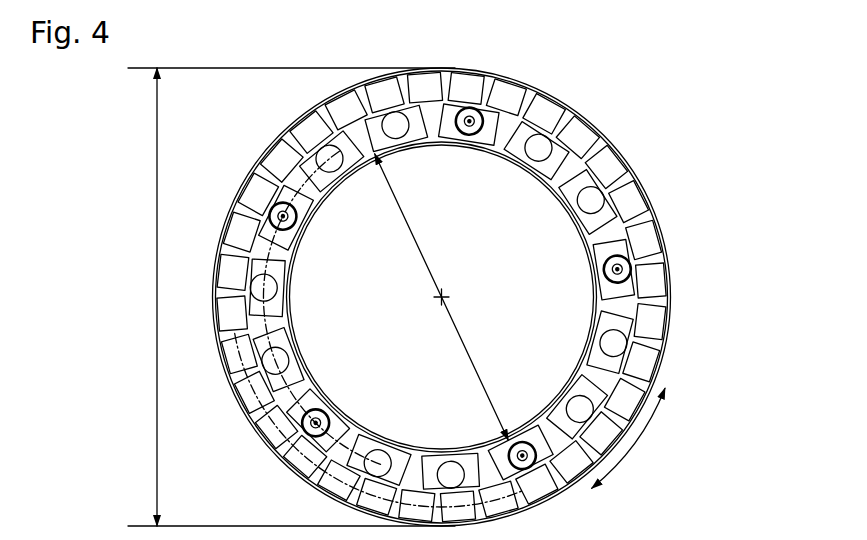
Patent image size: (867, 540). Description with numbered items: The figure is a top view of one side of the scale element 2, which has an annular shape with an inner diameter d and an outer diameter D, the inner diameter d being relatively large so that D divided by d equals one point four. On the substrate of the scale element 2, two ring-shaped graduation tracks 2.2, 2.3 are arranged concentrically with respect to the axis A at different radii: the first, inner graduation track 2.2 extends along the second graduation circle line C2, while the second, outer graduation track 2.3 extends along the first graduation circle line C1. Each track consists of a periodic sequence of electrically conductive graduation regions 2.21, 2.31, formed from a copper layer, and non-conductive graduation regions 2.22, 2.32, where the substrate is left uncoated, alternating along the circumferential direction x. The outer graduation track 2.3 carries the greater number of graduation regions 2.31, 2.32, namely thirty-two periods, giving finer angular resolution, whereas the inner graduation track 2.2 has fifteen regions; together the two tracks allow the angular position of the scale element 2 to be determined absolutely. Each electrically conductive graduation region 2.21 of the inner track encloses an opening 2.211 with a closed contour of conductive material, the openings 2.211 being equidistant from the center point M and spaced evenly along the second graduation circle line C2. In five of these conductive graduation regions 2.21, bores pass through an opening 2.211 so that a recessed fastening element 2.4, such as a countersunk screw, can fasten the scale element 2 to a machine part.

The scale element 2 is at (481, 297).
The first graduation track 2.2 is at (568, 175).
The electrically conductive graduation region 2.21 is at (579, 345).
The opening 2.211 is at (610, 338).
The non-conductive graduation region 2.22 is at (603, 233).
The second graduation track 2.3 is at (645, 237).
The electrically conductive graduation region 2.31 is at (648, 365).
The non-conductive graduation region 2.32 is at (662, 298).
The fastening element 2.4 is at (298, 213).
The first graduation circle line C1 is at (248, 398).
The second graduation circle line C2 is at (270, 262).
The outer diameter D is at (288, 297).
The inner diameter d is at (442, 297).
The center point M is at (436, 297).
The axis A is at (406, 296).
The circumferential direction x is at (628, 438).